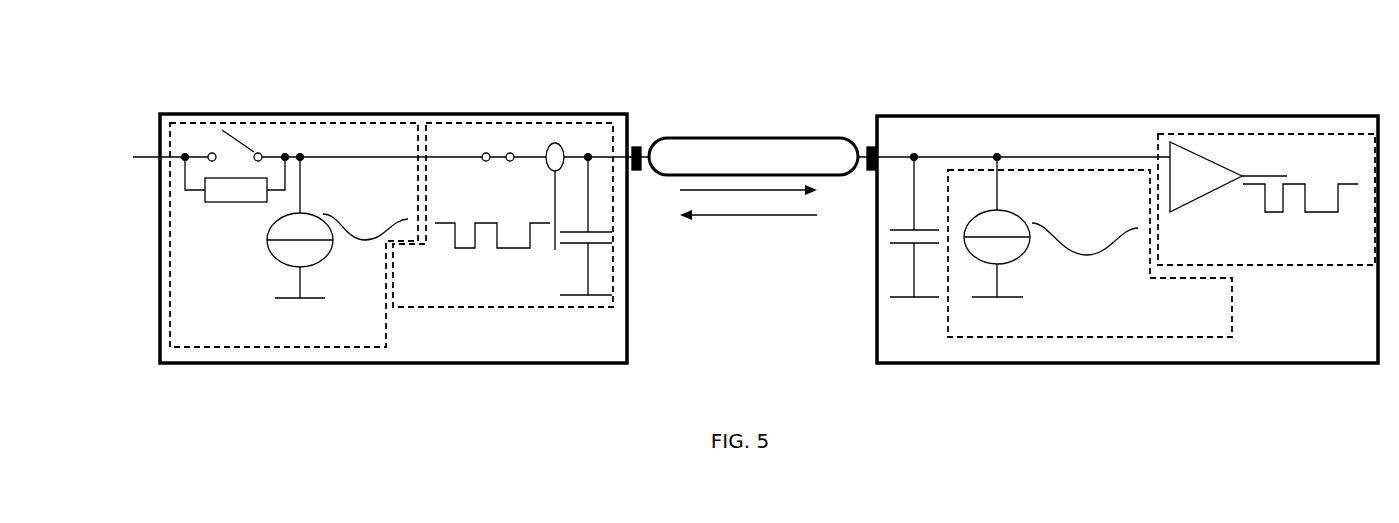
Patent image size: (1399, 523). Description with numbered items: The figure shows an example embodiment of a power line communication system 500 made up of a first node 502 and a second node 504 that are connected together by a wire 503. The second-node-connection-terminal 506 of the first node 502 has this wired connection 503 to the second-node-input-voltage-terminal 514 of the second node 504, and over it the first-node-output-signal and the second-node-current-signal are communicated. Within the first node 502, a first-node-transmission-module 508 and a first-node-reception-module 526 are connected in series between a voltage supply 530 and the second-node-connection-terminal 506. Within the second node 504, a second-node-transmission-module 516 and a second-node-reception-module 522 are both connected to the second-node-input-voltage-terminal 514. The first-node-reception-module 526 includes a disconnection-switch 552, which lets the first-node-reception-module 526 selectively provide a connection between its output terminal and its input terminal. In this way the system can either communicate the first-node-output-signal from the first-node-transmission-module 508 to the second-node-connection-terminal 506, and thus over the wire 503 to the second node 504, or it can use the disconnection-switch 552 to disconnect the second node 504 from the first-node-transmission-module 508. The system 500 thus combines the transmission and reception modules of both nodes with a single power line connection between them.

The power line communication system 500 is at (1246, 100).
The first node 502 is at (525, 363).
The wire 503 is at (772, 137).
The second node 504 is at (1000, 115).
The second-node-connection-terminal 506 is at (637, 147).
The first-node-transmission-module 508 is at (240, 347).
The second-node-input-voltage-terminal 514 is at (868, 147).
The second-node-transmission-module 516 is at (970, 337).
The second-node-reception-module 522 is at (1293, 268).
The first-node-reception-module 526 is at (493, 310).
The voltage supply 530 is at (134, 174).
The disconnection-switch 552 is at (500, 140).